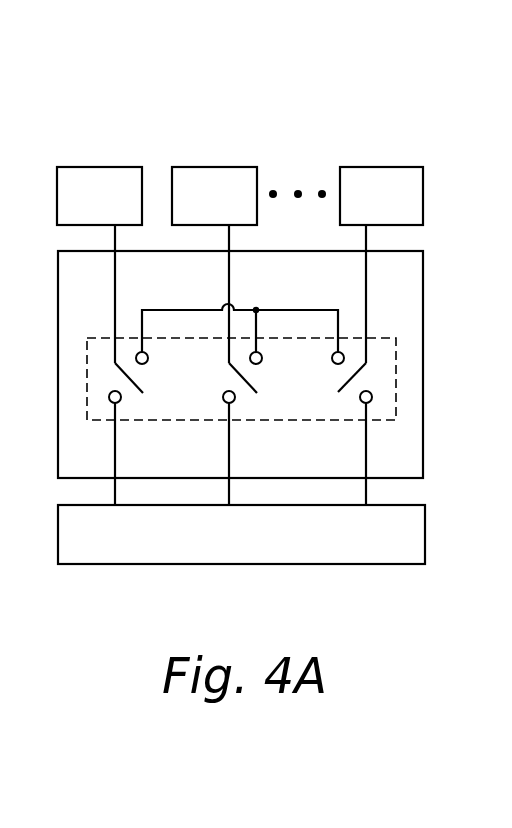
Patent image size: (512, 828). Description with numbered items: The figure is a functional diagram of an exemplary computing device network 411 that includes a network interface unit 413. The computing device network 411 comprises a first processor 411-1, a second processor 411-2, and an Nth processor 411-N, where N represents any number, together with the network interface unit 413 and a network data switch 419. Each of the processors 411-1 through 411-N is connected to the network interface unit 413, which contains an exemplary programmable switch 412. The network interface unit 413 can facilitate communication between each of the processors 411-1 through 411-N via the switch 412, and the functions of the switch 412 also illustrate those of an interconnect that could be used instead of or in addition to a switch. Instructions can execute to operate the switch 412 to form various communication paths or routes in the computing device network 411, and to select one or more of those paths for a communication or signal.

The computing device network 411 is at (112, 121).
The first processor 411-1 is at (136, 212).
The second processor 411-2 is at (251, 212).
The Nth processor 411-N is at (418, 212).
The programmable switch 412 is at (299, 421).
The network interface unit 413 is at (193, 290).
The network data switch 419 is at (266, 552).